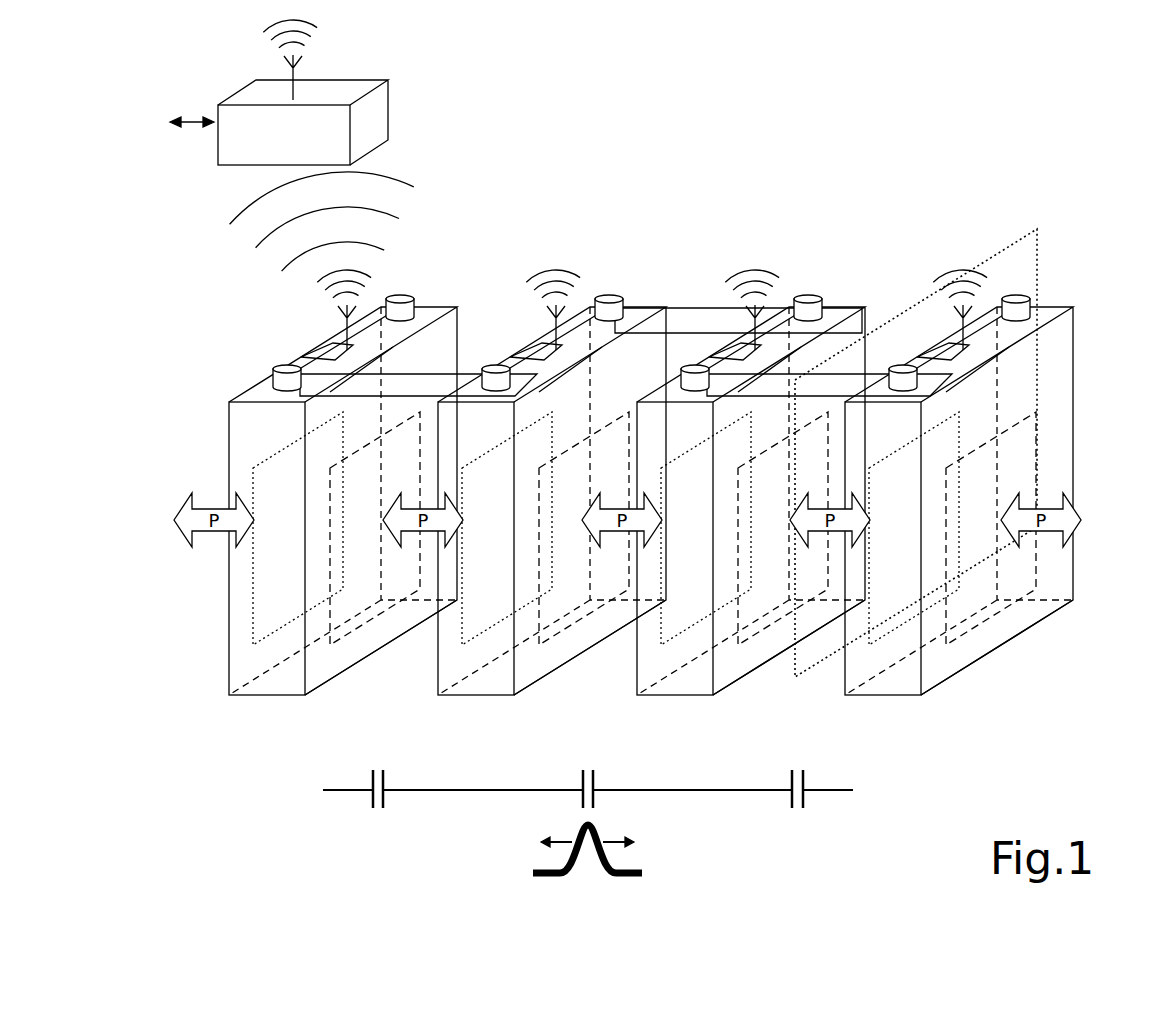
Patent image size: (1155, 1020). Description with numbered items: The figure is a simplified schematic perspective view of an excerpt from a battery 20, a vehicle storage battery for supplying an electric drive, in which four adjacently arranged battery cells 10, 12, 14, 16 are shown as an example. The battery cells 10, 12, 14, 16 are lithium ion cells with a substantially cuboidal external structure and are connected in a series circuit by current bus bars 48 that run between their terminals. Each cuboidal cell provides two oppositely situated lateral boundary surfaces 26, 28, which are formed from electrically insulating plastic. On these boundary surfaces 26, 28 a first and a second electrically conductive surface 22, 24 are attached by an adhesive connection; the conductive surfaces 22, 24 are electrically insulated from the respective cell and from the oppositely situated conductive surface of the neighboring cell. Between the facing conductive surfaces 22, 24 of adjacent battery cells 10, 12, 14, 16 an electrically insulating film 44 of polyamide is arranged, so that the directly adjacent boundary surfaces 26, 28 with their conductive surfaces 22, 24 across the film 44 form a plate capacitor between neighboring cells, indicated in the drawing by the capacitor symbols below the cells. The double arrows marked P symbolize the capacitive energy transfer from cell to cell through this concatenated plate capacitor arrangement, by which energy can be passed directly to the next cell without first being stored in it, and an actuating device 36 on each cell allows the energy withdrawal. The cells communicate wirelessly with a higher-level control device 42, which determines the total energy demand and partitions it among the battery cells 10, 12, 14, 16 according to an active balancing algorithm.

The battery cell 10 is at (438, 306).
The battery cell 12 is at (584, 306).
The battery cell 14 is at (858, 306).
The battery cell 16 is at (1054, 306).
The battery 20 is at (978, 168).
The first electrically conductive surface 22 is at (270, 645).
The second electrically conductive surface 24 is at (344, 647).
The lateral boundary surface 26 is at (252, 386).
The lateral boundary surface 28 is at (358, 652).
The actuating device 36 is at (350, 346).
The control device 42 is at (386, 110).
The electrically insulating film 44 is at (1014, 232).
The current bus bar 48 is at (446, 384).